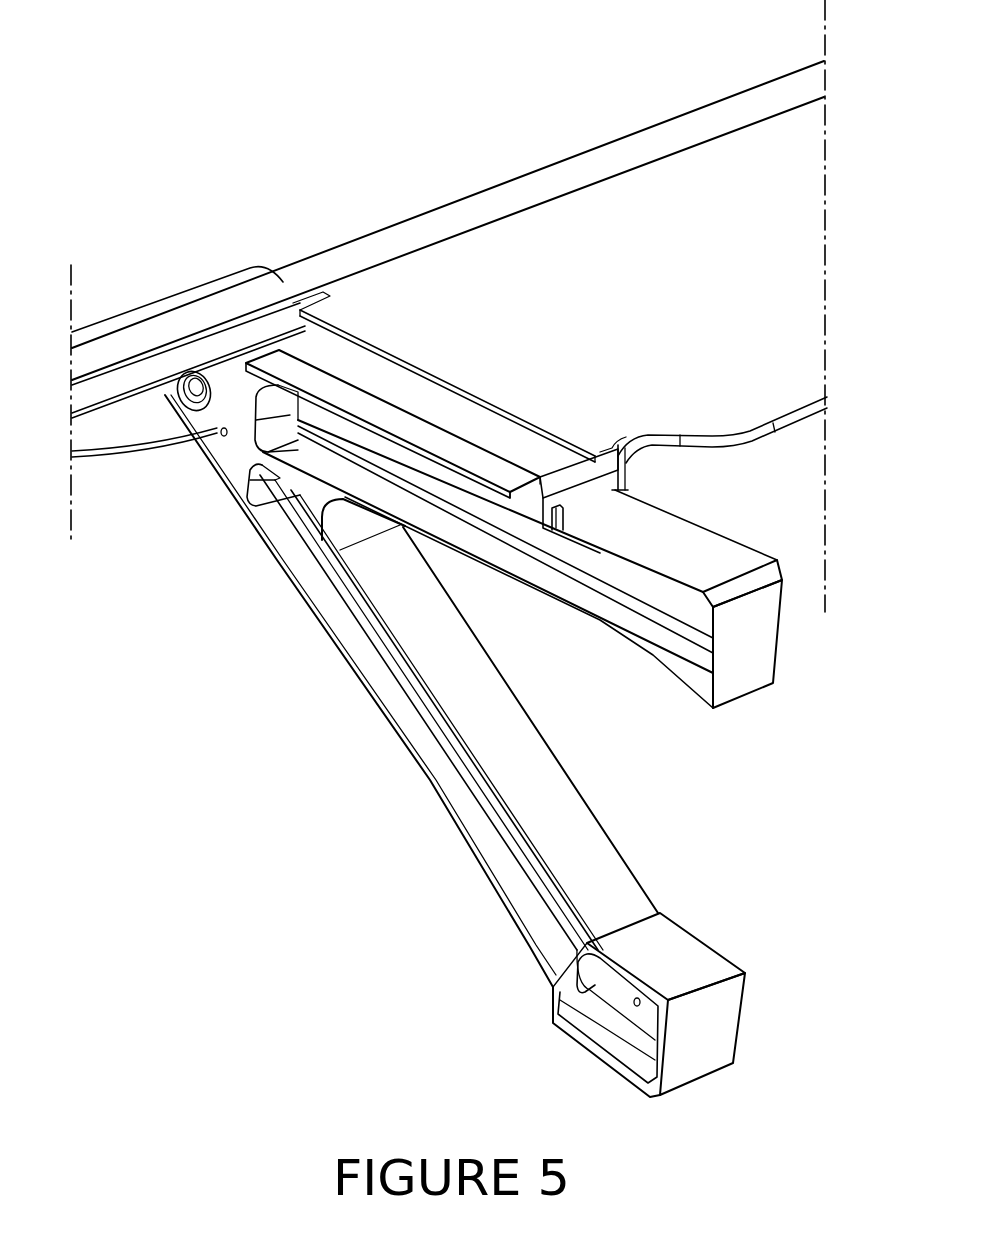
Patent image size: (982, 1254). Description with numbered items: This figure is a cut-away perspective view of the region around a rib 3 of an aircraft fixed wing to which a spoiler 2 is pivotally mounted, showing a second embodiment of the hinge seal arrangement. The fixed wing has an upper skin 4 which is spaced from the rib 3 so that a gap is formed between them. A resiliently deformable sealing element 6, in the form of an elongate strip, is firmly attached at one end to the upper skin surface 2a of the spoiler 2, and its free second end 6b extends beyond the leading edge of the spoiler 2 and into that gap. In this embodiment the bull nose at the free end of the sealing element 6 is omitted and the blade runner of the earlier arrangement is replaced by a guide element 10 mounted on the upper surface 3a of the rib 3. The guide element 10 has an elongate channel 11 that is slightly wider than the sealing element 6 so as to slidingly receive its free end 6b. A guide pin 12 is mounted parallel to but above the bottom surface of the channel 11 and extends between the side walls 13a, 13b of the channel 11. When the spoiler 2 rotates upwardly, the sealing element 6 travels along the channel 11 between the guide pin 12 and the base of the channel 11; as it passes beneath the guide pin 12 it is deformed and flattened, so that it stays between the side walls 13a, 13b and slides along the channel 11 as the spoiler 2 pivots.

The spoiler 2 is at (510, 174).
The upper skin surface 2a is at (355, 250).
The rib 3 is at (568, 600).
The upper surface 3a is at (727, 552).
The upper skin 4 is at (627, 311).
The sealing element 6 is at (432, 397).
The second end 6b is at (530, 450).
The guide element 10 is at (650, 472).
The elongate channel 11 is at (572, 478).
The guide pin 12 is at (363, 344).
The side wall 13a is at (535, 492).
The side wall 13b is at (607, 452).